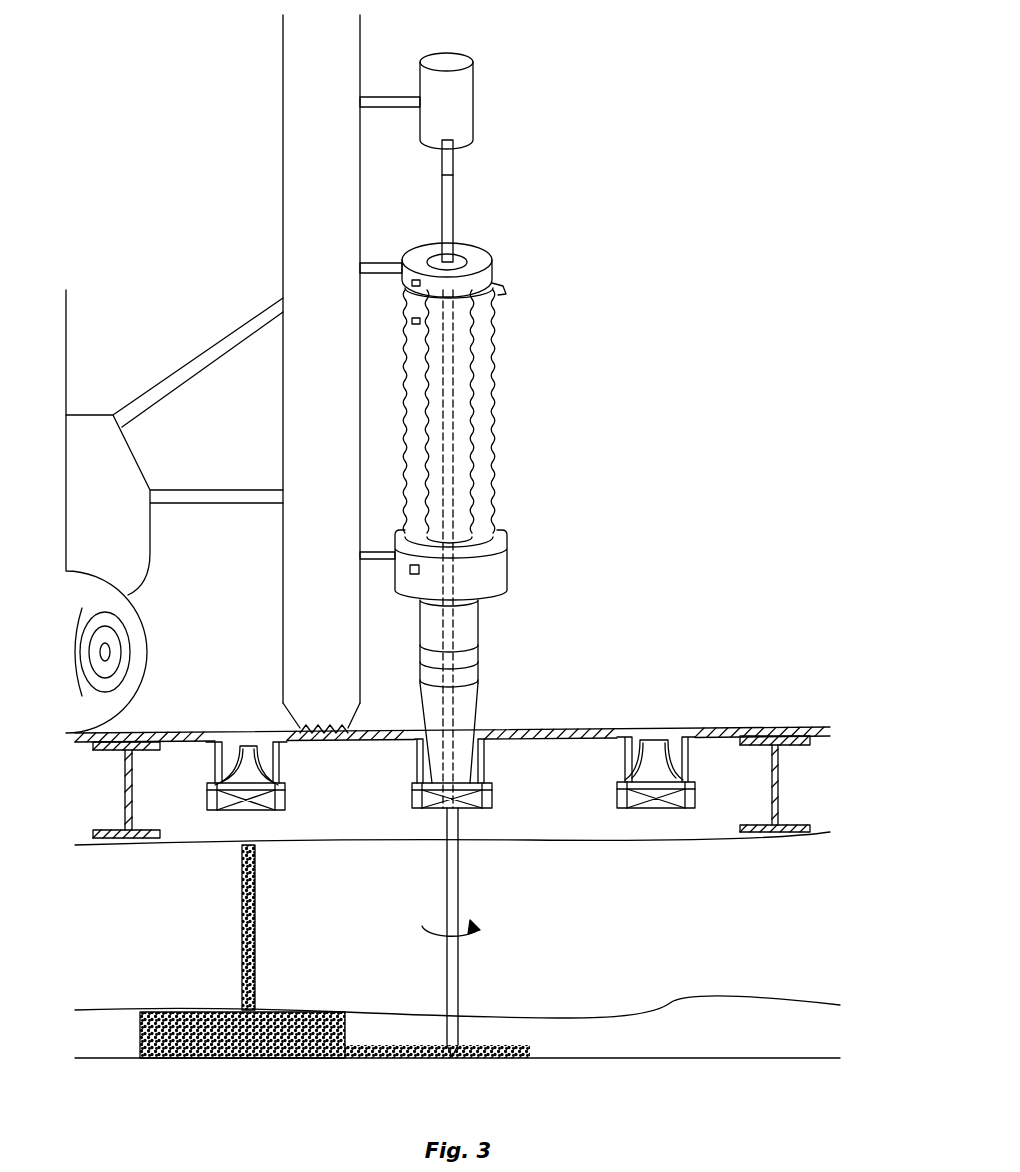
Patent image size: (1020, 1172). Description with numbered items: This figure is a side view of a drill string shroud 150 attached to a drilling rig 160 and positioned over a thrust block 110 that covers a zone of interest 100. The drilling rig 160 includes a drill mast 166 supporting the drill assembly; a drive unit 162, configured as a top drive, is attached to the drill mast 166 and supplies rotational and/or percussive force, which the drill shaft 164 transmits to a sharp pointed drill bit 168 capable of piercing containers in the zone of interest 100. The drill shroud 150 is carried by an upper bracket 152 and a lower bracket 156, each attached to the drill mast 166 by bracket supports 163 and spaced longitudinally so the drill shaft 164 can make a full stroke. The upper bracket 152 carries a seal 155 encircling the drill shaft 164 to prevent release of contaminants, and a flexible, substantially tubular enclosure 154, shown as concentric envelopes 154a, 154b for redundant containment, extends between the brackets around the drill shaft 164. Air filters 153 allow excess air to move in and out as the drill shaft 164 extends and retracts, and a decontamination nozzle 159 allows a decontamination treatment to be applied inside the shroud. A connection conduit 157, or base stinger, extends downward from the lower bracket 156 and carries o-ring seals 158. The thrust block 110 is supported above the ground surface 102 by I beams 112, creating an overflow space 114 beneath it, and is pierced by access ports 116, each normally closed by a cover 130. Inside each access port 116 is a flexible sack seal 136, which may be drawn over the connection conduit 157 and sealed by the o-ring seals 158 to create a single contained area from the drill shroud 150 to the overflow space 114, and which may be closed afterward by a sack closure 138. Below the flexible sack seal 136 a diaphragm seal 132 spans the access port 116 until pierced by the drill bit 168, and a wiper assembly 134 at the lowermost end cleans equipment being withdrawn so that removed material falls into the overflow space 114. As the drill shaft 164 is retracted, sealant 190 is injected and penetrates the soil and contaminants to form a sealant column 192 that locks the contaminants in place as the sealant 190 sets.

The zone of interest 100 is at (657, 949).
The ground surface 102 is at (518, 807).
The thrust block 110 is at (790, 720).
The I beams 112 is at (780, 770).
The overflow space 114 is at (533, 838).
The access port 116 is at (483, 738).
The cover 130 is at (222, 735).
The diaphragm seal 132 is at (490, 790).
The wiper assembly 134 is at (440, 812).
The flexible sack seal 136 is at (478, 690).
The sack closure 138 is at (230, 758).
The drill string shroud 150 is at (420, 435).
The upper bracket 152 is at (490, 272).
The air filter 153 is at (410, 568).
The flexible enclosure 154 is at (505, 417).
The concentric envelope 154a is at (490, 380).
The concentric envelope 154b is at (475, 440).
The seal 155 is at (452, 258).
The lower bracket 156 is at (500, 548).
The connection conduit 157 is at (470, 598).
The o-ring seals 158 is at (478, 648).
The decontamination nozzle 159 is at (502, 289).
The drilling rig 160 is at (183, 196).
The drive unit 162 is at (452, 107).
The bracket supports 163 is at (372, 265).
The drill shaft 164 is at (448, 210).
The drill mast 166 is at (307, 188).
The drill bit 168 is at (458, 1048).
The sealant 190 is at (256, 912).
The sealant column 192 is at (270, 1008).